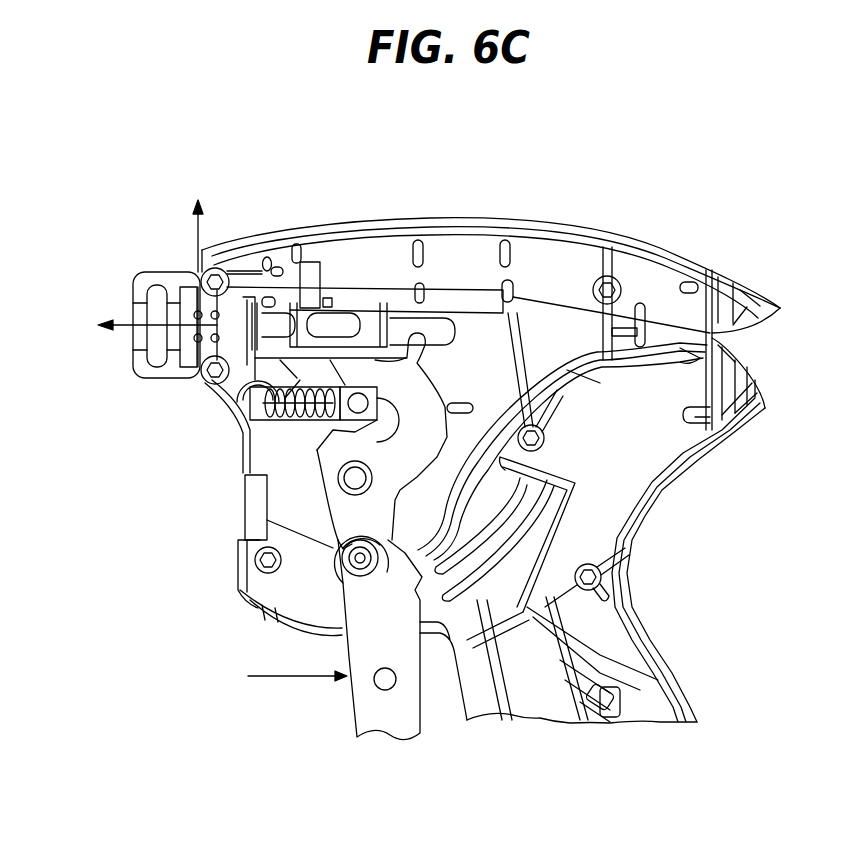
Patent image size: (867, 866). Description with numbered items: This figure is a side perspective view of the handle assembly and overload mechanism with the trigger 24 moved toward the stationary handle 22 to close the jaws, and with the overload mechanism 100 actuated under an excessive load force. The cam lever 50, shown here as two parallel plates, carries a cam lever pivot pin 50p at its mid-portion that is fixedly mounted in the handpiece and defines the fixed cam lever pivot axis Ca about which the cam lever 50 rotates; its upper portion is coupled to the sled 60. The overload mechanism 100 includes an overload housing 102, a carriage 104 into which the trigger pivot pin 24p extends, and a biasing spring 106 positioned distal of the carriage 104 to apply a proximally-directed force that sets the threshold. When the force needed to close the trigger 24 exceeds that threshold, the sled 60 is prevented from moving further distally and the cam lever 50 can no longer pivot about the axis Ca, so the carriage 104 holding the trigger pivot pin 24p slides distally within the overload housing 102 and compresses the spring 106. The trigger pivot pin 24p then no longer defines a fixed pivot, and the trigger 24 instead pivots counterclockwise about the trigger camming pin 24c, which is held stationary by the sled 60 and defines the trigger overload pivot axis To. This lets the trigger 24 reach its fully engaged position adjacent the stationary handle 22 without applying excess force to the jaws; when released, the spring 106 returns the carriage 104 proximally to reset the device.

The stationary handle 22 is at (663, 682).
The trigger 24 is at (399, 652).
The trigger camming pin 24c is at (355, 563).
The trigger pivot pin 24p is at (366, 345).
The cam lever 50 is at (410, 467).
The cam lever pivot pin 50p is at (347, 485).
The sled 60 is at (382, 312).
The overload mechanism 100 is at (300, 370).
The overload housing 102 is at (260, 443).
The carriage 104 is at (372, 412).
The biasing spring 106 is at (247, 397).
The cam lever pivot axis Ca is at (347, 478).
The trigger overload pivot axis To is at (355, 560).